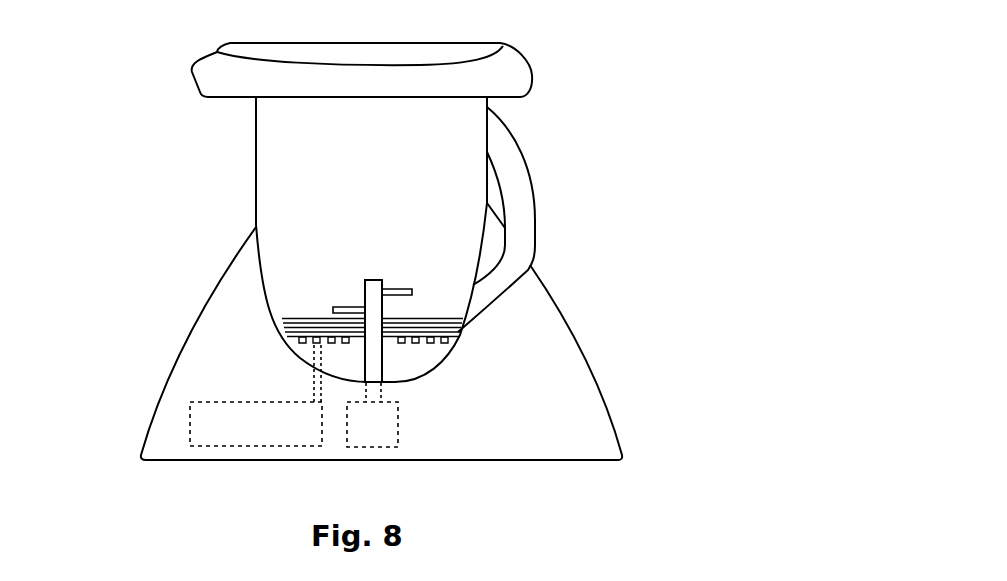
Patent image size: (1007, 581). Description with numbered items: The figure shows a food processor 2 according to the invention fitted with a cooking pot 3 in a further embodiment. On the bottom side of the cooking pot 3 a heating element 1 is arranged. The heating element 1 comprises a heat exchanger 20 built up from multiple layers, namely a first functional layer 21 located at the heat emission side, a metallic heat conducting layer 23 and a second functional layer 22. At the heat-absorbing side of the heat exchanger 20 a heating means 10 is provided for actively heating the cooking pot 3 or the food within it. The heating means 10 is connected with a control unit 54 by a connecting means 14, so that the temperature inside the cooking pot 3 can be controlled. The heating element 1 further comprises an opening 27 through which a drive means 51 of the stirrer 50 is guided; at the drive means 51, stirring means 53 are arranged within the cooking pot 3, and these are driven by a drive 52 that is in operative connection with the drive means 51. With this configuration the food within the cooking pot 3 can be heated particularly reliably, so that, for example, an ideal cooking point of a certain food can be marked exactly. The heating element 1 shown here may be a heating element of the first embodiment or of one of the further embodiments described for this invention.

The food processor 2 is at (559, 116).
The cooking pot 3 is at (256, 203).
The heating element 1 is at (310, 306).
The stirrer 50 is at (373, 260).
The stirring means 53 is at (393, 289).
The opening 27 is at (390, 311).
The first functional layer 21 is at (463, 318).
The metallic heat conducting layer 23 is at (458, 331).
The second functional layer 22 is at (447, 343).
The heating means 10 is at (444, 354).
The heat exchanger 20 is at (270, 330).
The connecting means 14 is at (315, 390).
The drive means 51 is at (380, 362).
The control unit 54 is at (203, 447).
The drive 52 is at (380, 447).